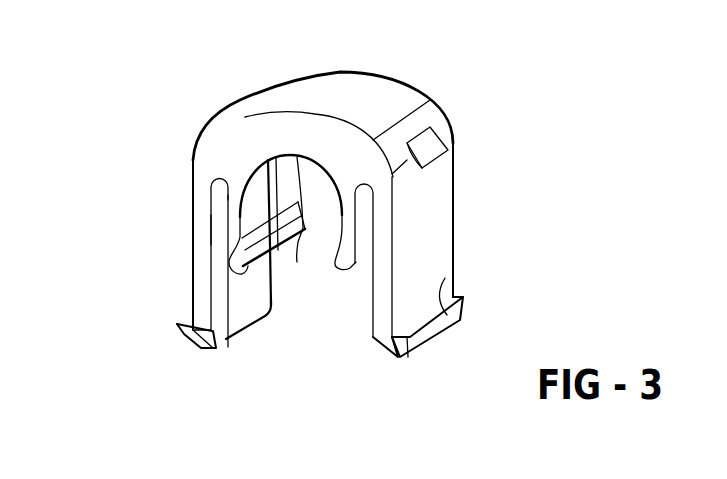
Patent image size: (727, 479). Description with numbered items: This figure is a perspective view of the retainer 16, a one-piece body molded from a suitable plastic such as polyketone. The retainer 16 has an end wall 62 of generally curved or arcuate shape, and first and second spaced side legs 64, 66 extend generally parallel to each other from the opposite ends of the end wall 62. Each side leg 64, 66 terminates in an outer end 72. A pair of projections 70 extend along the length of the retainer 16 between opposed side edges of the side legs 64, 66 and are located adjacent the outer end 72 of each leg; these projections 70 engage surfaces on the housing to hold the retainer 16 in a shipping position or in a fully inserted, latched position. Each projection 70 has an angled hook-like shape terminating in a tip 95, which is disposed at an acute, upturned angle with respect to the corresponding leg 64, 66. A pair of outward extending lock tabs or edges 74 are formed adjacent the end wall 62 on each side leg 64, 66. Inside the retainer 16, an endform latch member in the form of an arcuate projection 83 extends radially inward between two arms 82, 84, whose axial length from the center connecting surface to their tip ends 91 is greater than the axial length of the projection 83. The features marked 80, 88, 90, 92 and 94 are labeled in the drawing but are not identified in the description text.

The retainer 16 is at (176, 92).
The end wall 62 is at (390, 91).
The first side leg 64 is at (443, 243).
The second side leg 66 is at (205, 275).
The projection 70 is at (178, 339).
The outer end 72 is at (205, 348).
The lock tab 74 is at (437, 147).
The central tongue 80 is at (334, 332).
The arm 82 is at (353, 233).
The arcuate projection 83 is at (297, 262).
The arm 84 is at (228, 210).
The apex of bridge 88 is at (300, 153).
The outer surface 90 is at (453, 190).
The tip end 91 is at (244, 272).
The outer leg surface 92 is at (193, 166).
The inner leg surface 94 is at (225, 228).
The tip 95 is at (177, 324).